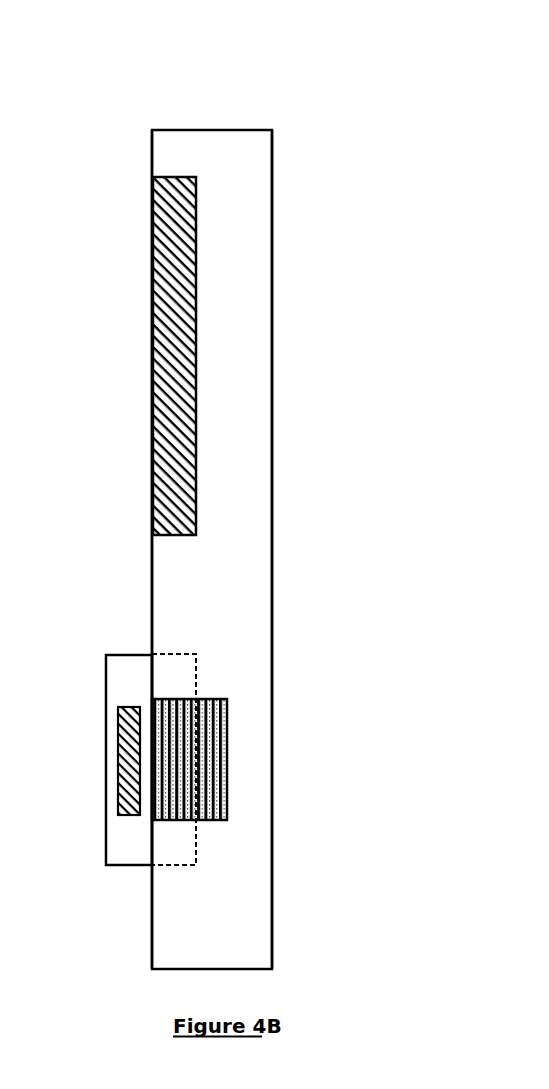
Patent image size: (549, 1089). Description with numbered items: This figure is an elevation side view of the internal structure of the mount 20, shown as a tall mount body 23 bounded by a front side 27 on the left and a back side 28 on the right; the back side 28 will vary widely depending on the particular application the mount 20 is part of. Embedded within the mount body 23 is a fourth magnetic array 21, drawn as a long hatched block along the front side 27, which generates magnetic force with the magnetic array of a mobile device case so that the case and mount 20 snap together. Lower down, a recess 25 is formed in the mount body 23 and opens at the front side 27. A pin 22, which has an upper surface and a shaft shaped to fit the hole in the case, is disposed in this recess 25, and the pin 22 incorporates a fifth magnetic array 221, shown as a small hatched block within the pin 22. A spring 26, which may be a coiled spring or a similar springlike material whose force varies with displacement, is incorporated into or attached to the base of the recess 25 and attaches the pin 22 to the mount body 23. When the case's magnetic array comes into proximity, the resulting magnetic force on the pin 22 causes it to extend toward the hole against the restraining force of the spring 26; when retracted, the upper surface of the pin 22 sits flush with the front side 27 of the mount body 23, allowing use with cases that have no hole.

The mount 20 is at (191, 130).
The fourth magnetic array 21 is at (160, 307).
The pin 22 is at (106, 738).
The fifth magnetic array 221 is at (133, 717).
The mount body 23 is at (226, 576).
The recess 25 is at (175, 667).
The spring 26 is at (218, 733).
The front side 27 is at (152, 582).
The back side 28 is at (270, 437).